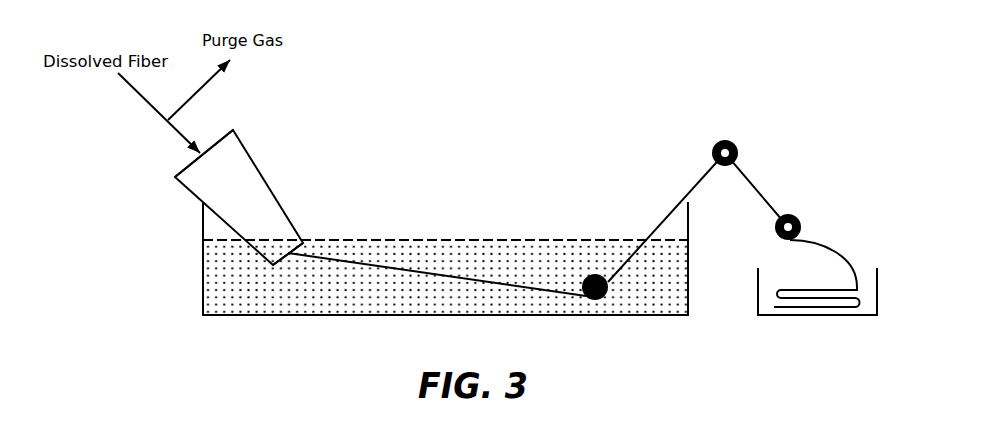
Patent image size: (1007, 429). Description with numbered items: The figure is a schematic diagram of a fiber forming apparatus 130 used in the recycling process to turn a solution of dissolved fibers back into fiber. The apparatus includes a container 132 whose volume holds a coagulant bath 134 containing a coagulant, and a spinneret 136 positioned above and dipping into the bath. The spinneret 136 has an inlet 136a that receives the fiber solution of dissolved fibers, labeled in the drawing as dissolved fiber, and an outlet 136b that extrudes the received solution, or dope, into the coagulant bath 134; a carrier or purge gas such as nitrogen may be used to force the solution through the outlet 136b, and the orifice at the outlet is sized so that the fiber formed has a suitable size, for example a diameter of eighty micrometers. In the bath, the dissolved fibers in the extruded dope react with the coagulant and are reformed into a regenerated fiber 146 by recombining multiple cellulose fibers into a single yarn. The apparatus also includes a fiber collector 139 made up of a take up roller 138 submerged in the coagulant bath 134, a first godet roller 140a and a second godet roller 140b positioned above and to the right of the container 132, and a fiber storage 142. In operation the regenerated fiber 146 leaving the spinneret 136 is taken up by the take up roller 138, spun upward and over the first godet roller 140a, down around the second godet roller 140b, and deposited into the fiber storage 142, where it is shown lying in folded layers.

The fiber forming apparatus 130 is at (785, 128).
The container 132 is at (203, 275).
The coagulant bath 134 is at (478, 257).
The spinneret 136 is at (262, 180).
The inlet 136a is at (173, 168).
The outlet 136b is at (305, 250).
The take up roller 138 is at (603, 302).
The fiber collector 139 is at (565, 107).
The first godet roller 140a is at (715, 143).
The second godet roller 140b is at (803, 223).
The fiber storage 142 is at (875, 285).
The regenerated fiber 146 is at (668, 205).